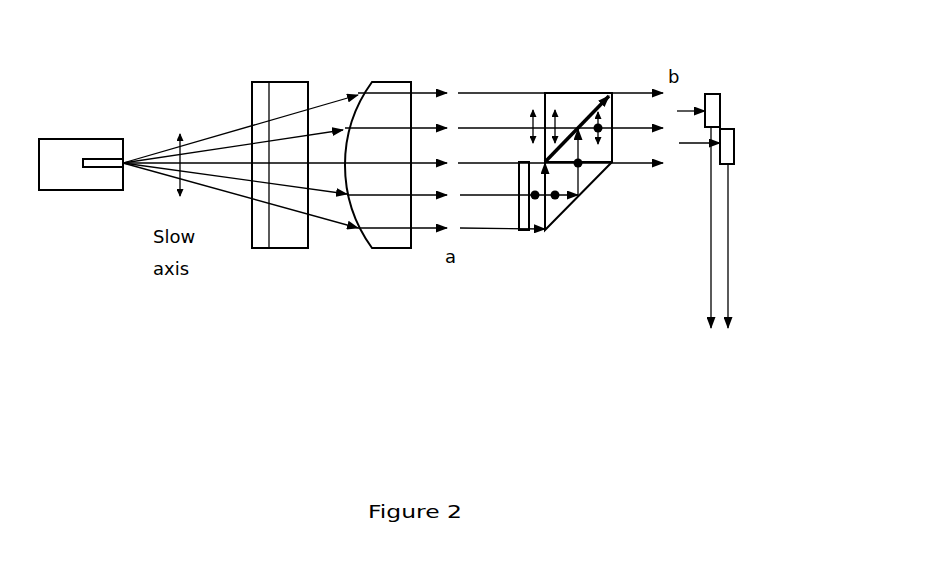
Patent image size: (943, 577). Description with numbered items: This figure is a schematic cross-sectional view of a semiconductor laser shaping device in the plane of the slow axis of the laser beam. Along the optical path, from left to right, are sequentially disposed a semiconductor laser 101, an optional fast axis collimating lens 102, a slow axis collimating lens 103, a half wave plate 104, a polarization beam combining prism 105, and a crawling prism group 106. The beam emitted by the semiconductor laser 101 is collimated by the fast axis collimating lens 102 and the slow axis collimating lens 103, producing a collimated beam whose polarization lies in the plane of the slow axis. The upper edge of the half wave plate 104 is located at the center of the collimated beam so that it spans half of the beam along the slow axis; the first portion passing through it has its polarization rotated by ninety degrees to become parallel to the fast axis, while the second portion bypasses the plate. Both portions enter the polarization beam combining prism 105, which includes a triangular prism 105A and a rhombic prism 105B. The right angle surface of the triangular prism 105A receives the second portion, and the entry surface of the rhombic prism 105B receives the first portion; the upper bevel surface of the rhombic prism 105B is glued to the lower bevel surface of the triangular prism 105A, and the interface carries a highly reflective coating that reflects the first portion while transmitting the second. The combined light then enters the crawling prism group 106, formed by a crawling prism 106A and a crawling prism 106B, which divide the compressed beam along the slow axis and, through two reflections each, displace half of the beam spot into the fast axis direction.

The semiconductor laser 101 is at (93, 183).
The fast axis collimating lens 102 is at (279, 242).
The slow axis collimating lens 103 is at (392, 240).
The half wave plate 104 is at (527, 225).
The polarization beam combining prism 105 is at (591, 144).
The triangular prism 105A is at (562, 110).
The rhombic prism 105B is at (593, 173).
The crawling prism group 106 is at (758, 107).
The crawling prism 106A is at (712, 93).
The crawling prism 106B is at (737, 142).